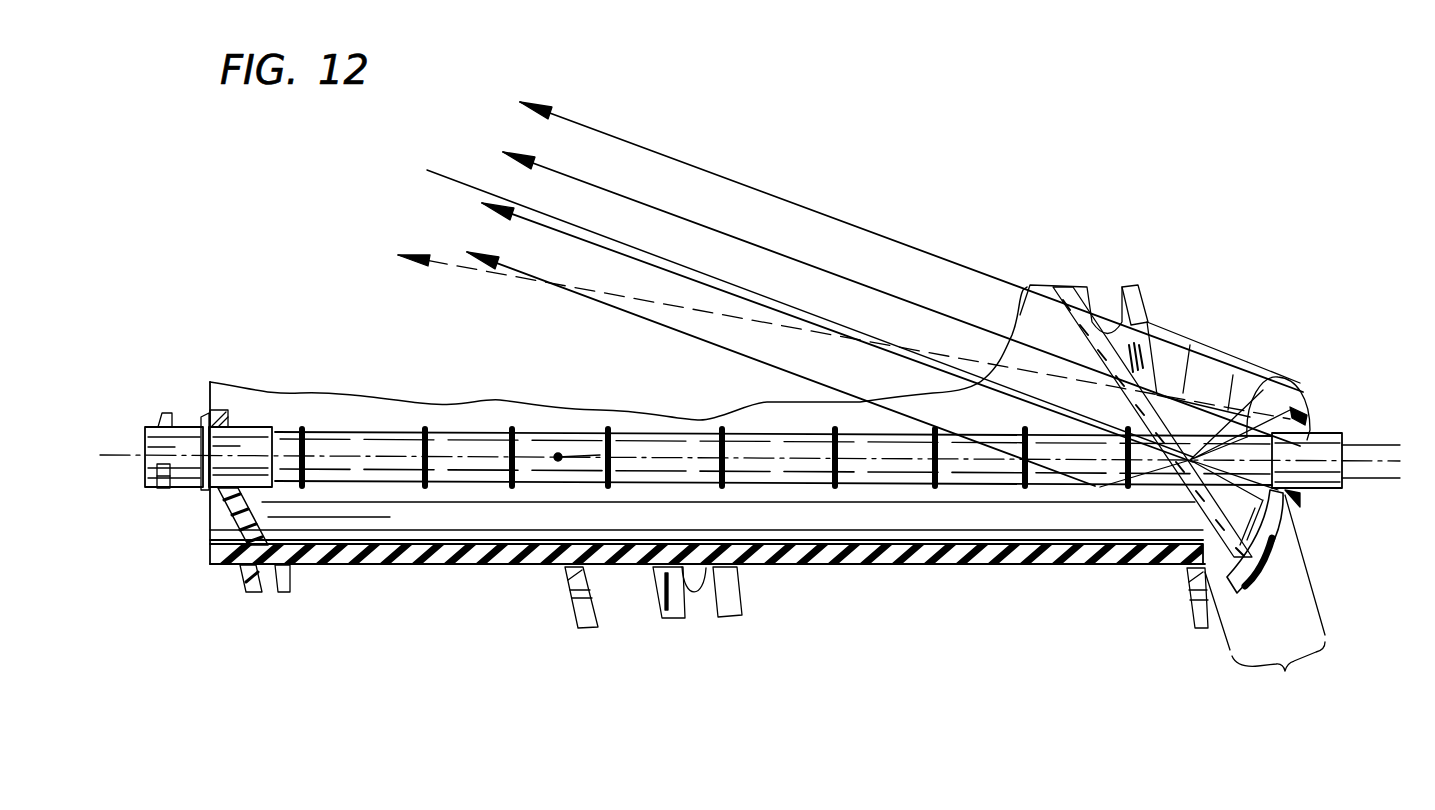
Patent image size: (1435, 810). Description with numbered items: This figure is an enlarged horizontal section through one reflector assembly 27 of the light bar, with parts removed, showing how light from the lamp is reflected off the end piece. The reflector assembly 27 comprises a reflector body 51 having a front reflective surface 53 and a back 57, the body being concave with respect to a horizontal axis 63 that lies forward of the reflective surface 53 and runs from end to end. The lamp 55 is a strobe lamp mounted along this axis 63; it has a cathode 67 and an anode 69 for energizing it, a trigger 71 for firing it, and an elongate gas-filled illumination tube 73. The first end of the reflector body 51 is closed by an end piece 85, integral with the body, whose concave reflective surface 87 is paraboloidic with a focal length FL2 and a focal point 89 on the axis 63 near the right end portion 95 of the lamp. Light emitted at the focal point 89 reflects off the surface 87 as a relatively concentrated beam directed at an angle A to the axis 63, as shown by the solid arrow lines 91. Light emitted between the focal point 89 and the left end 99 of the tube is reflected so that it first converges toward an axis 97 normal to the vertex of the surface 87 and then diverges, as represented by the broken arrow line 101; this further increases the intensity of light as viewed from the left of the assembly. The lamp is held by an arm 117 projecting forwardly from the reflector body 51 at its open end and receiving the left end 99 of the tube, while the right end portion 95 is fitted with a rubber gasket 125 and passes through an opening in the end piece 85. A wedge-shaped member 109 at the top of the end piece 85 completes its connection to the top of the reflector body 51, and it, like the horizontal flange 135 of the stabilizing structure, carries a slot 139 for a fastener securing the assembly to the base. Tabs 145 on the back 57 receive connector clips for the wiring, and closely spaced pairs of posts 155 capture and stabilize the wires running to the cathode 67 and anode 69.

The reflector assembly 27 is at (434, 694).
The reflector body 51 is at (1010, 567).
The front reflective surface 53 is at (278, 408).
The lamp 55 is at (693, 483).
The back 57 is at (875, 567).
The horizontal axis 63 is at (105, 455).
The cathode 67 is at (155, 490).
The anode 69 is at (1347, 440).
The trigger 71 is at (425, 488).
The illumination tube 73 is at (547, 482).
The end piece 85 is at (1290, 535).
The concave reflective surface 87 is at (1203, 370).
The focal point 89 is at (1190, 465).
The solid arrow lines 91 is at (700, 224).
The right end portion 95 is at (1267, 382).
The axis 97 is at (430, 170).
The left end 99 is at (265, 490).
The broken arrow line 101 is at (595, 290).
The wedge-shaped member 109 is at (1060, 285).
The arm 117 is at (207, 540).
The rubber gasket 125 is at (1342, 488).
The horizontal flange 135 is at (735, 618).
The slot 139 is at (690, 618).
The tab 145 is at (590, 630).
The pair of posts 155 is at (287, 605).
The angle A is at (709, 350).
The focal length FL2 is at (1265, 600).